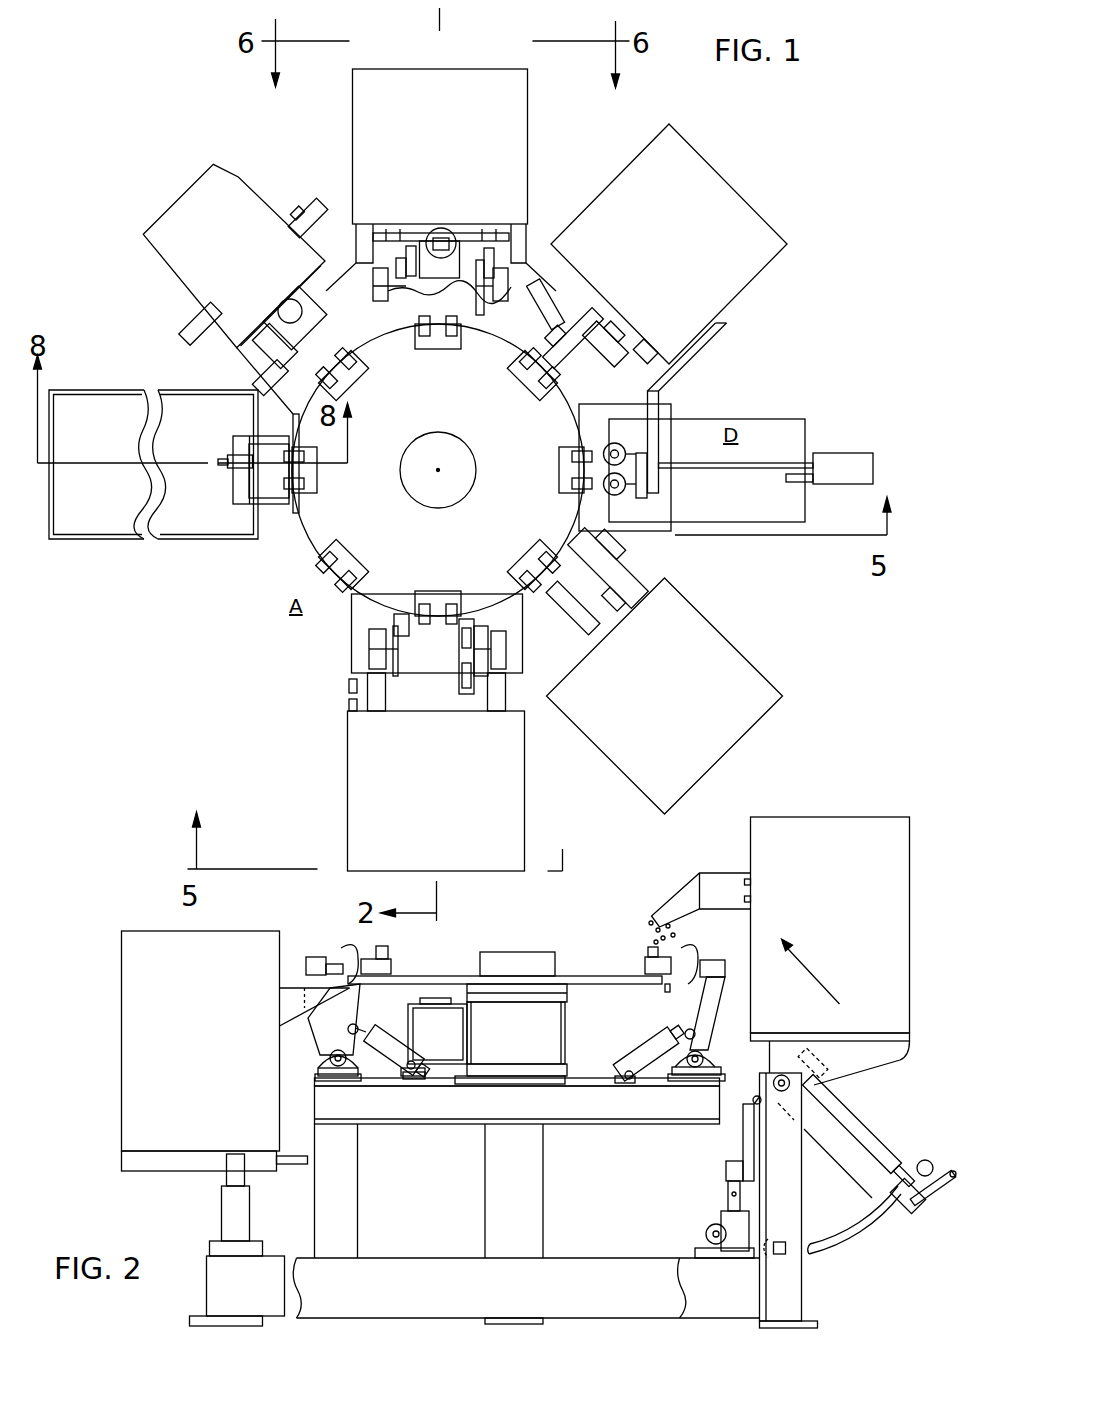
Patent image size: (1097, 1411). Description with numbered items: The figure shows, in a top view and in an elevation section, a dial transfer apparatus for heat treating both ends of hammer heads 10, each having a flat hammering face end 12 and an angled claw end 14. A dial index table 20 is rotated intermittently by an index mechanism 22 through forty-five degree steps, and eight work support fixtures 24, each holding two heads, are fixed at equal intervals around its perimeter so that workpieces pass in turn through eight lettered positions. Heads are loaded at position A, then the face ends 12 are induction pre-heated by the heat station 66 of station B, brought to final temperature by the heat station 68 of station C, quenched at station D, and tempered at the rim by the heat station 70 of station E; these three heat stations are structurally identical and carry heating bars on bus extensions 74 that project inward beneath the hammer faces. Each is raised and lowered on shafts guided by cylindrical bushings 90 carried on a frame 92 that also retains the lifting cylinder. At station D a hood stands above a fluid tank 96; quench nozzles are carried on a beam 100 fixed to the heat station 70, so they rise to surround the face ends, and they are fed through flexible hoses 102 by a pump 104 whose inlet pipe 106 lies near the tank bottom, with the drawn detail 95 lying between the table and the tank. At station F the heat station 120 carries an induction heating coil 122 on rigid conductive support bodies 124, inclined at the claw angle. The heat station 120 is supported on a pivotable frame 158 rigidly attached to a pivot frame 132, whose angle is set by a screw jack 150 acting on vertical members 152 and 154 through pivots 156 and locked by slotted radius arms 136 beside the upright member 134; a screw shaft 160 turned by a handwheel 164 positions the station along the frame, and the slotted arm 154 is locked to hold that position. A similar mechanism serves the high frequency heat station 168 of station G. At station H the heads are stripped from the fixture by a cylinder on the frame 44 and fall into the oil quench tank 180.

In FIG. 2, the hammer head 10 is at (337, 949).
In FIG. 2, the hammering face end 12 is at (350, 970).
In FIG. 2, the claw end 14 is at (347, 941).
In FIG. 1, the dial index table 20 is at (438, 470).
In FIG. 2, the dial index table 20 is at (424, 967).
In FIG. 2, the index mechanism 22 is at (545, 1025).
In FIG. 1, the work support fixture 24 is at (432, 338).
In FIG. 1, the frame 44 is at (344, 638).
In FIG. 2, the frame 44 is at (556, 1081).
In FIG. 1, the heat station 66 is at (496, 793).
In FIG. 2, the heat station 66 is at (122, 1100).
In FIG. 1, the heat station 68 is at (734, 658).
In FIG. 1, the heat station 70 is at (750, 233).
In FIG. 2, the bus extension 74 is at (276, 1003).
In FIG. 2, the cylindrical bushing 90 is at (242, 1205).
In FIG. 2, the frame 92 is at (206, 1270).
In FIG. 1, the guide rollers 95 is at (620, 488).
In FIG. 1, the fluid tank 96 is at (765, 513).
In FIG. 1, the beam 100 is at (678, 370).
In FIG. 1, the flexible hose 102 is at (705, 465).
In FIG. 1, the pump 104 is at (837, 458).
In FIG. 1, the inlet pipe 106 is at (793, 482).
In FIG. 1, the heat station 120 is at (440, 131).
In FIG. 2, the heat station 120 is at (850, 811).
In FIG. 2, the induction heating coil 122 is at (640, 932).
In FIG. 2, the rigid conductive support body 124 is at (686, 869).
In FIG. 2, the pivot frame 132 is at (838, 1148).
In FIG. 2, the support post 134 is at (772, 1284).
In FIG. 2, the slotted radius arm 136 is at (818, 1240).
In FIG. 2, the screw jack 150 is at (713, 1218).
In FIG. 2, the vertical member 152 is at (718, 1165).
In FIG. 2, the vertical member 154 is at (735, 1131).
In FIG. 2, the pivot 156 is at (720, 1190).
In FIG. 2, the pivotable frame 158 is at (752, 1076).
In FIG. 2, the screw shaft 160 is at (852, 1110).
In FIG. 2, the handwheel 164 is at (902, 1206).
In FIG. 1, the heat station 168 is at (160, 266).
In FIG. 1, the tank 180 is at (127, 531).